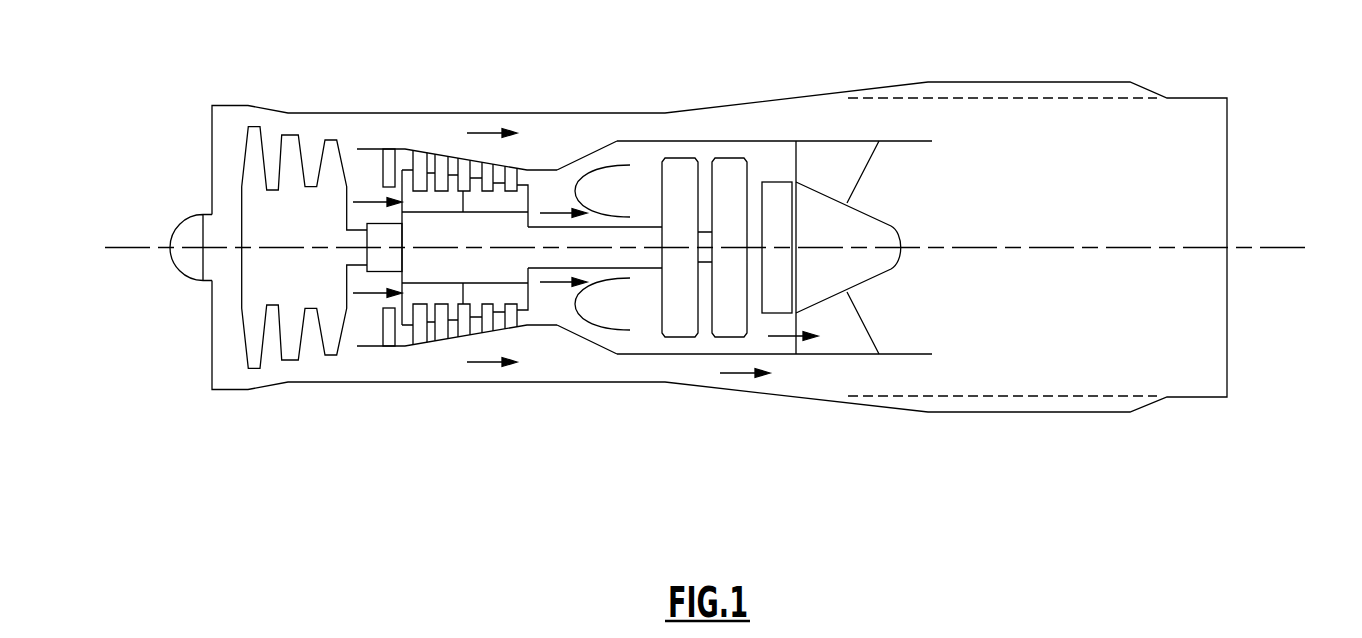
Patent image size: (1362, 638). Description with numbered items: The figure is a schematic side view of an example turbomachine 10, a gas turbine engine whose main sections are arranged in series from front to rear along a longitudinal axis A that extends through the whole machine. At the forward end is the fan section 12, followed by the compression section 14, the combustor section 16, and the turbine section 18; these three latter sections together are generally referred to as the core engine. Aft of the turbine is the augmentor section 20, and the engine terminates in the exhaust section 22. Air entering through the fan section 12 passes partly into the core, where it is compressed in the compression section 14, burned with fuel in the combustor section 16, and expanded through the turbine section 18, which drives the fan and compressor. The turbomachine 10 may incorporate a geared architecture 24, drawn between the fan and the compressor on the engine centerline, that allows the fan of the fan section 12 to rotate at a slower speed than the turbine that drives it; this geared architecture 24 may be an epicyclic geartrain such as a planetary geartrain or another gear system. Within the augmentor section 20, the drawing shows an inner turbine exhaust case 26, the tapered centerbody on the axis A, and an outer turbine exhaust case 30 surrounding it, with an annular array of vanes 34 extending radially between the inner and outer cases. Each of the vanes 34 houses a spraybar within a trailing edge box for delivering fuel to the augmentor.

The turbomachine 10 is at (300, 71).
The fan section 12 is at (288, 437).
The compression section 14 is at (449, 437).
The combustor section 16 is at (597, 437).
The turbine section 18 is at (712, 437).
The augmentor section 20 is at (881, 434).
The exhaust section 22 is at (1079, 449).
The geared architecture 24 is at (378, 255).
The inner turbine exhaust case 26 is at (885, 235).
The outer turbine exhaust case 30 is at (918, 139).
The vanes 34 is at (860, 177).
The axis A is at (1307, 248).